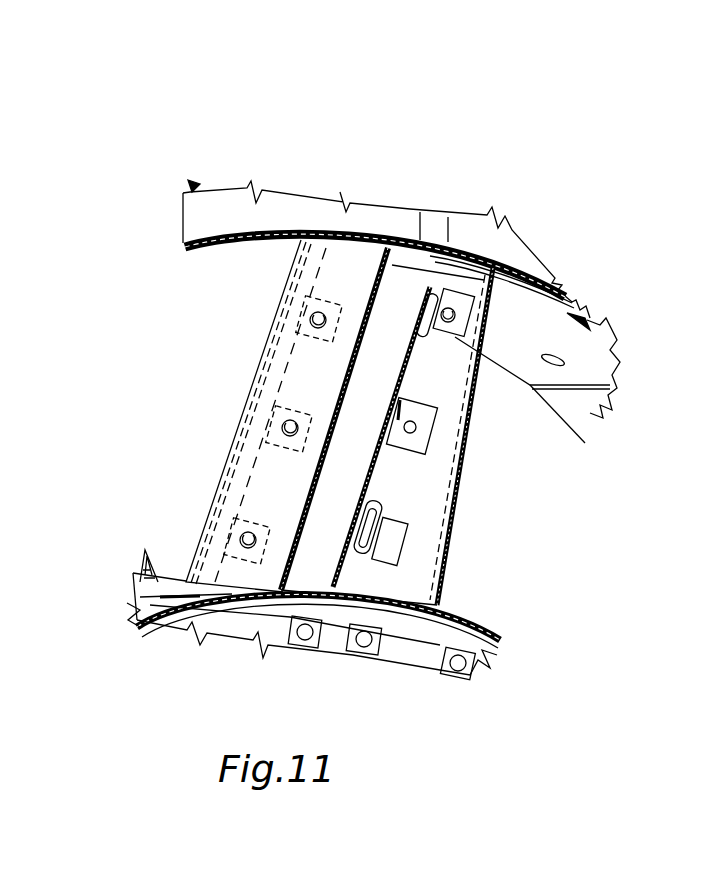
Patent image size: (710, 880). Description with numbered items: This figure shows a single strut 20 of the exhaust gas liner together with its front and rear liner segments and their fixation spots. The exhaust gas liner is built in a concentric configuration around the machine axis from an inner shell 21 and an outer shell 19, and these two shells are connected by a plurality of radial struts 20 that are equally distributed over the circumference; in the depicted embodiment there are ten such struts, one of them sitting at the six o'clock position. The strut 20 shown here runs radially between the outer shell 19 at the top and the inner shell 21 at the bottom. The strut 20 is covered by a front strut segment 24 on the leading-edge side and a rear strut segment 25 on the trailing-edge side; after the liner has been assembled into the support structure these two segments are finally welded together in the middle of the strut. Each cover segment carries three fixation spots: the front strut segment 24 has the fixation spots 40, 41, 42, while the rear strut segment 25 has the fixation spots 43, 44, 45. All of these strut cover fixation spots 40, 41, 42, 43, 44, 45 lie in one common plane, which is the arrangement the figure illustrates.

The outer shell 19 is at (593, 343).
The strut 20 is at (404, 188).
The inner shell 21 is at (507, 648).
The front strut segment 24 is at (473, 287).
The rear strut segment 25 is at (337, 263).
The fixation spot 40 is at (452, 332).
The fixation spot 41 is at (410, 433).
The fixation spot 42 is at (373, 533).
The fixation spot 43 is at (313, 320).
The fixation spot 44 is at (277, 428).
The fixation spot 45 is at (240, 532).